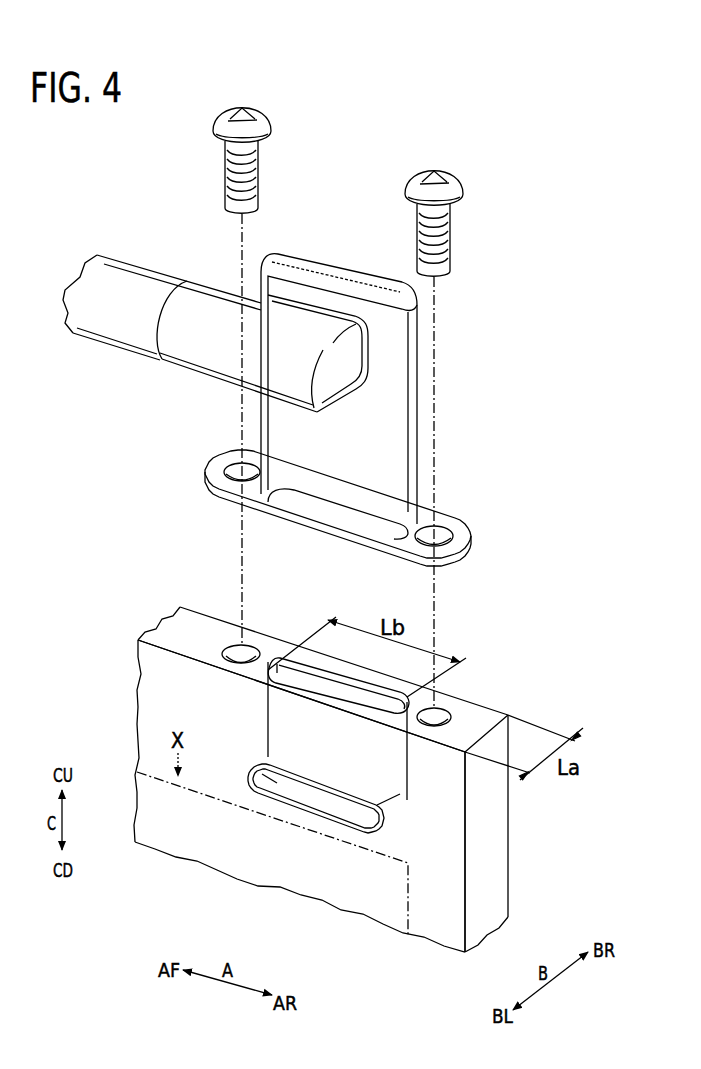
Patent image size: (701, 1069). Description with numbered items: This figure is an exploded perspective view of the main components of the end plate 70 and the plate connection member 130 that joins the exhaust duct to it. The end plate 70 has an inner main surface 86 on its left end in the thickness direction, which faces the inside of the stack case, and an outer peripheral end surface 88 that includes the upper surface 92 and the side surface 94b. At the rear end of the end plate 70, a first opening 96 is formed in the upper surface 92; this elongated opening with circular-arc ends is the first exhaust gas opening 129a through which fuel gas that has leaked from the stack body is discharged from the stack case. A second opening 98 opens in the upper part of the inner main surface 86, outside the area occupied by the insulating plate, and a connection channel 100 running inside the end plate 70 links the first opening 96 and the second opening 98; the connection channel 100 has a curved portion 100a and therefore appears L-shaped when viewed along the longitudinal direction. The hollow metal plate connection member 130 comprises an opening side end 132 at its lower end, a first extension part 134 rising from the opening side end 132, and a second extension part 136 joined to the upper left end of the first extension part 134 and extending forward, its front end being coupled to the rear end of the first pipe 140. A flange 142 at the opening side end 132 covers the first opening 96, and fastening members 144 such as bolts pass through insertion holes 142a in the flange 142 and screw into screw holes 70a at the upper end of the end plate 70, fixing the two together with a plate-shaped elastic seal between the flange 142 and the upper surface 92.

The plate connection member 130 is at (443, 120).
The fastening members 144 is at (453, 188).
The first extension part 134 is at (392, 382).
The opening side end 132 is at (362, 520).
The flange 142 is at (469, 534).
The insertion holes 142a is at (233, 464).
The first pipe 140 is at (113, 330).
The second extension part 136 is at (197, 354).
The end plate 70 is at (188, 848).
The screw holes 70a is at (236, 647).
The outer peripheral end surface 88 is at (348, 762).
The upper surface 92 is at (173, 631).
The side surface 94b is at (495, 828).
The inner main surface 86 is at (445, 870).
The first opening 96 is at (342, 693).
The first exhaust gas opening 129a is at (338, 686).
The connection channel 100 is at (268, 720).
The curved portion 100a is at (408, 797).
The second opening 98 is at (310, 807).